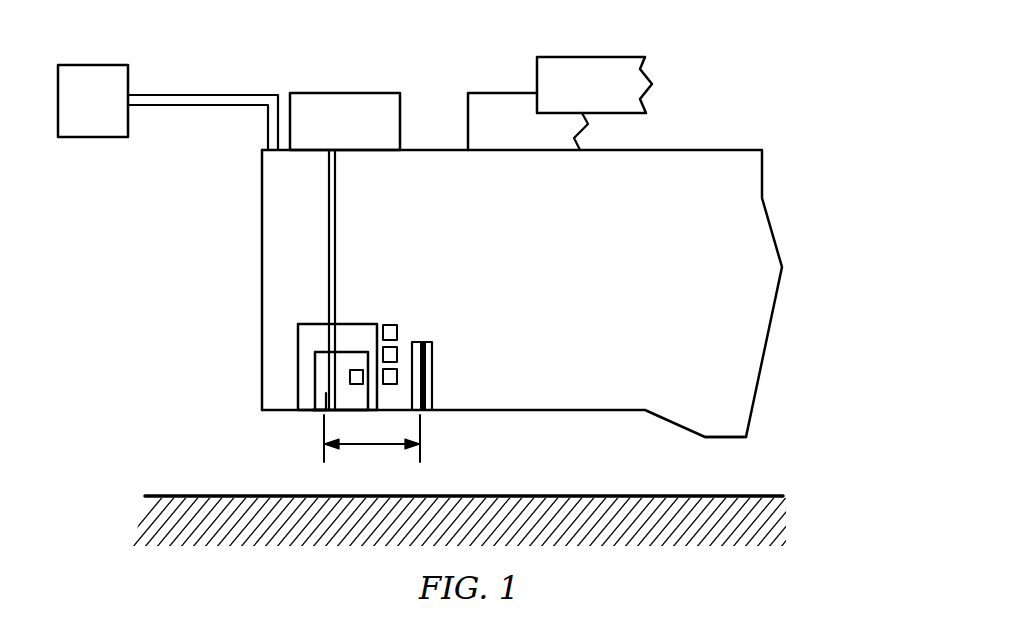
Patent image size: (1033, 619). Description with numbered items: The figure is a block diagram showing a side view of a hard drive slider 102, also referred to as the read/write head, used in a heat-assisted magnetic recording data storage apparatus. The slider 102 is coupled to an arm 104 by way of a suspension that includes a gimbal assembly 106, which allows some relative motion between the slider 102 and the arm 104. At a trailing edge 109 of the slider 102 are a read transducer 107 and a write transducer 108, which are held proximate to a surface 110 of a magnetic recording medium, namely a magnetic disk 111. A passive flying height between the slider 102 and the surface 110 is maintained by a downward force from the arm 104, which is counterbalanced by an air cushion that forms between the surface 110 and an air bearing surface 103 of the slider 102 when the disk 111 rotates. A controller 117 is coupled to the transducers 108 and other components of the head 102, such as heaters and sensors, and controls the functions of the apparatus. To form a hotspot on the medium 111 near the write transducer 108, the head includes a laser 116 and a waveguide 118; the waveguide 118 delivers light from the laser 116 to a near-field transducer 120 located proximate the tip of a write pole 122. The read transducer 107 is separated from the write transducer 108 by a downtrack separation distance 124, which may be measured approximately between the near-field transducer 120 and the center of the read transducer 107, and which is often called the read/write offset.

The slider 102 is at (690, 160).
The air bearing surface 103 is at (737, 440).
The arm 104 is at (612, 57).
The gimbal assembly 106 is at (497, 93).
The read transducer 107 is at (428, 342).
The write transducer 108 is at (350, 324).
The trailing edge 109 is at (262, 230).
The surface 110 is at (573, 494).
The magnetic disk 111 is at (740, 525).
The laser 116 is at (341, 93).
The controller 117 is at (99, 64).
The waveguide 118 is at (337, 188).
The near-field transducer 120 is at (326, 398).
The write pole 122 is at (318, 410).
The downtrack separation distance 124 is at (378, 446).